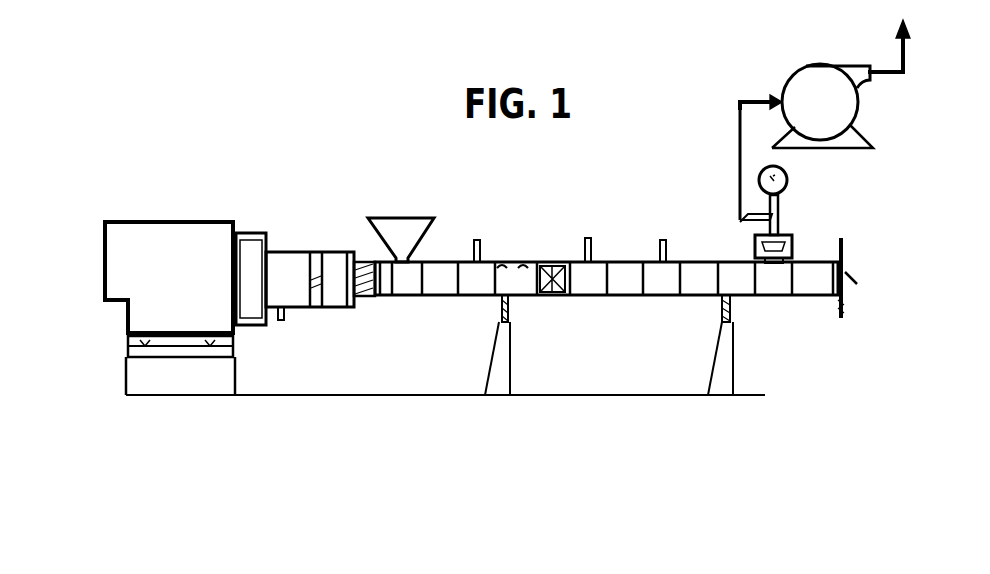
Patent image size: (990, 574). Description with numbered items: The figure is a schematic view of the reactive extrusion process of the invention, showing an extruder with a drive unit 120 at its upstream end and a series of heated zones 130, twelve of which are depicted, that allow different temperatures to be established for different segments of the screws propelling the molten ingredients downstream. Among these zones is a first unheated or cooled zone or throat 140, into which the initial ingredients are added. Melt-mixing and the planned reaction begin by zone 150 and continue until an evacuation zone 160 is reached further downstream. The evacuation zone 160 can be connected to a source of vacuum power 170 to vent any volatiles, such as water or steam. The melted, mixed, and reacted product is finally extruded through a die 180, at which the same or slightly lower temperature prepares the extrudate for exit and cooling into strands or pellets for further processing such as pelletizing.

The motor 120 is at (201, 305).
The heated zones 130 is at (890, 403).
The throat 140 is at (398, 240).
The zone 150 is at (523, 278).
The evacuation zone 160 is at (773, 290).
The source of vacuum power 170 is at (858, 99).
The die 180 is at (855, 265).